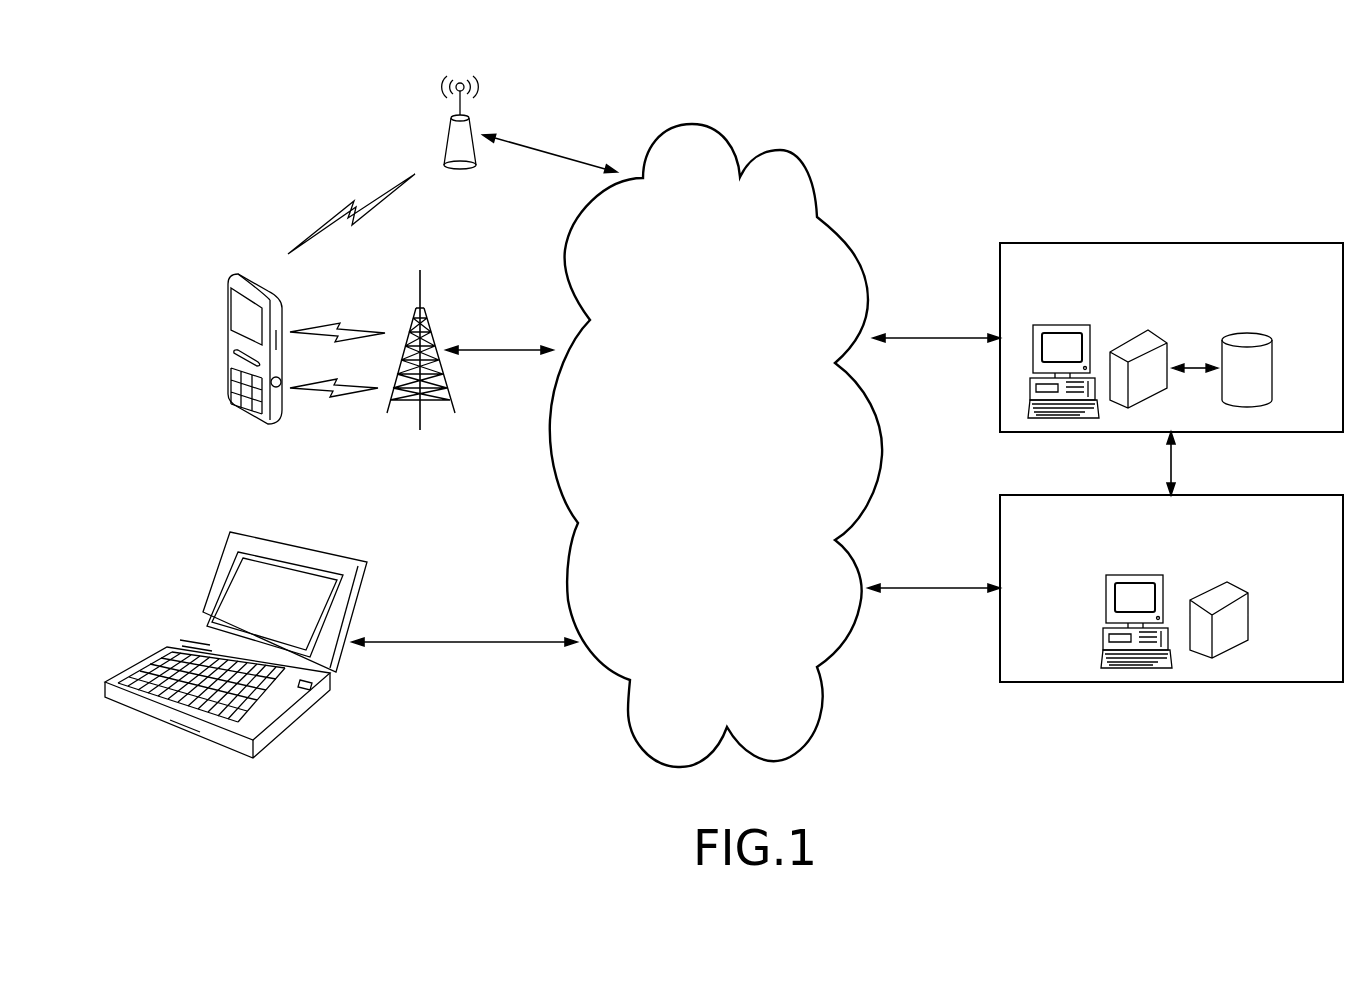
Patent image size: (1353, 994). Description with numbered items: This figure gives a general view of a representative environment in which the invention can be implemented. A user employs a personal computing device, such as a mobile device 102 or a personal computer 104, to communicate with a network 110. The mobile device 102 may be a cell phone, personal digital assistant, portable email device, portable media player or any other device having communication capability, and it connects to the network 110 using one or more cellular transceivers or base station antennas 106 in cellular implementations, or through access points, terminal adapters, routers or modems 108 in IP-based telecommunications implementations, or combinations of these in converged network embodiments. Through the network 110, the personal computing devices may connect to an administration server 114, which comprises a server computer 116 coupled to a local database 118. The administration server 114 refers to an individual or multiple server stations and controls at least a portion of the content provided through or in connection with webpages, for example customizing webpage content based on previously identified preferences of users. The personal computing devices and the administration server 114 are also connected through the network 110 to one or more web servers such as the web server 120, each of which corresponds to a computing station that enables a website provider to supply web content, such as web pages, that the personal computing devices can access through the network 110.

The mobile device 102 is at (228, 297).
The personal computer 104 is at (343, 553).
The base station antenna 106 is at (425, 315).
The access point 108 is at (437, 92).
The network 110 is at (792, 150).
The administration server 114 is at (1283, 243).
The server computer 116 is at (1058, 325).
The local database 118 is at (1273, 378).
The web server 120 is at (1278, 682).